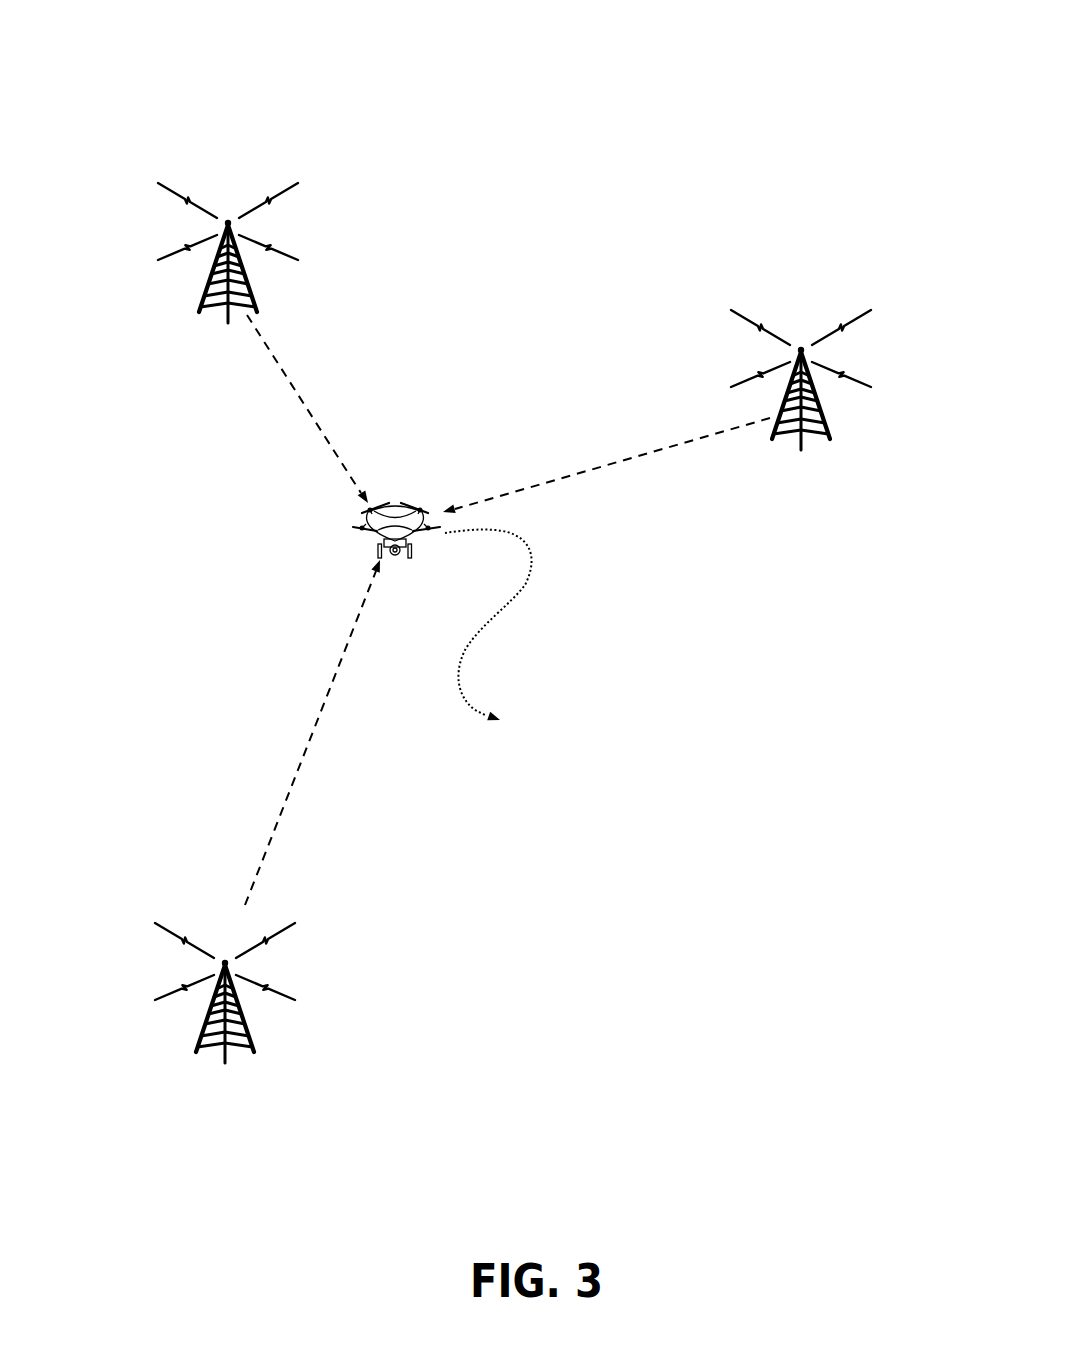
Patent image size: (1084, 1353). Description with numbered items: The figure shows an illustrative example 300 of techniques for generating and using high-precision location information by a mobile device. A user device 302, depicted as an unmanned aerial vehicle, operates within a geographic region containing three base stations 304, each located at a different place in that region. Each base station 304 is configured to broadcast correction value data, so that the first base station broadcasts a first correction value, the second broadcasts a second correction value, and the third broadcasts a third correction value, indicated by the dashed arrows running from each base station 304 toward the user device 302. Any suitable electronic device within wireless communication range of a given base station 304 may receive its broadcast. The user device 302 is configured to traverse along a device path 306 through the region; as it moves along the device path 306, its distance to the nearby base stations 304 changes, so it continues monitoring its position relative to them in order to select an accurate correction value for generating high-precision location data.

The illustrative example of techniques for generation and usage of high-precision lo 300 is at (502, 570).
The user device 302 is at (406, 496).
The base station 304 is at (215, 336).
The device path 306 is at (536, 606).